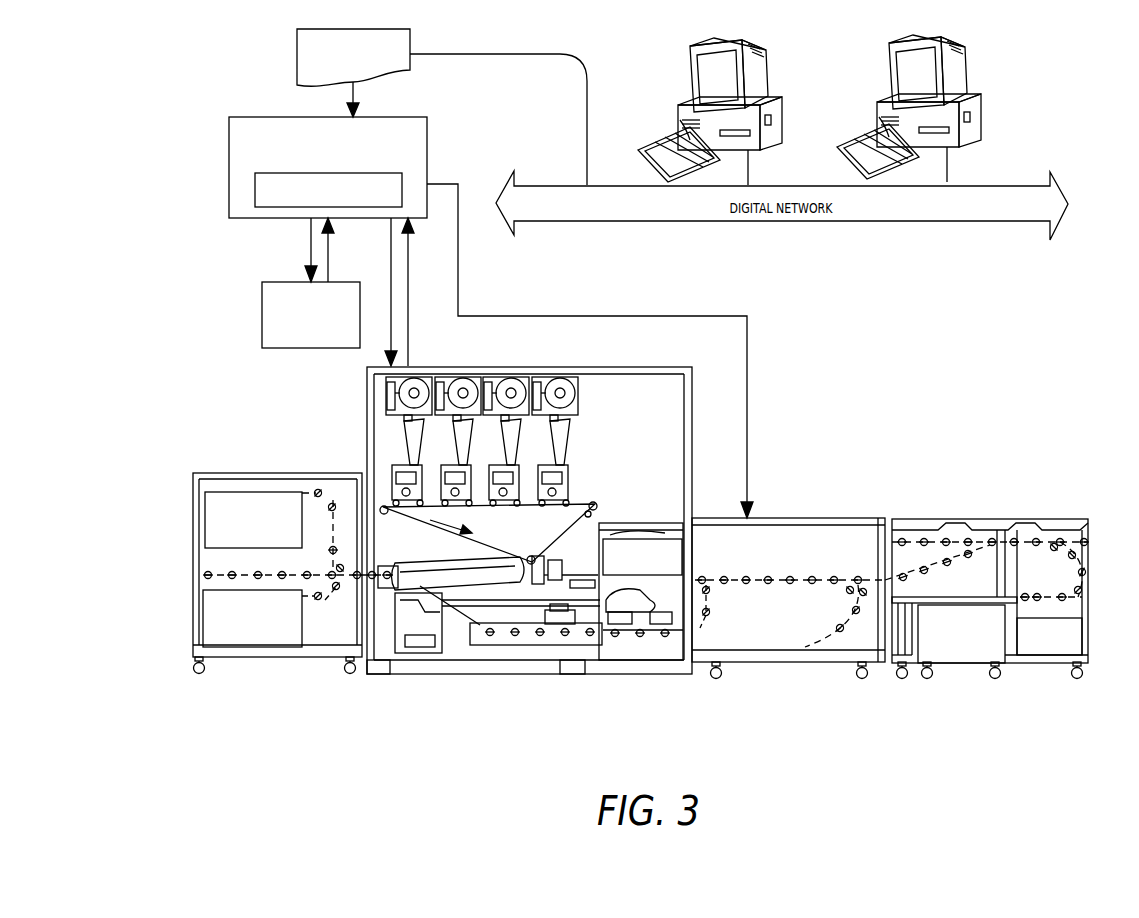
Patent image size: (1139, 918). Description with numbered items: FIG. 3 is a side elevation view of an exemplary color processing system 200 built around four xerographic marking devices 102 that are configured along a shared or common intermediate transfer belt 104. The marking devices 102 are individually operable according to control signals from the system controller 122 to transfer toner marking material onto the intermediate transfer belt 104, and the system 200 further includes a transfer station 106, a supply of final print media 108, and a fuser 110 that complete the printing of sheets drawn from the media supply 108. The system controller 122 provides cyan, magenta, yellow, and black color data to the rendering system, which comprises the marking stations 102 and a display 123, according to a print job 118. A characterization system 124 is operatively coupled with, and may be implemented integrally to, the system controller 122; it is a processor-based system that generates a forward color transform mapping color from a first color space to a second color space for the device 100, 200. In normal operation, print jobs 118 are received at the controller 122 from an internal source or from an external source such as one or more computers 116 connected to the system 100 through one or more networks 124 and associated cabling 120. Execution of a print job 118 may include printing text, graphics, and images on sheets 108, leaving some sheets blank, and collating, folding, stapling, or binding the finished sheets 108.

The system 200 is at (190, 114).
The print job 118 is at (410, 43).
The cabling 120 is at (587, 155).
The system controller 122 is at (229, 150).
The characterization system 124 is at (275, 173).
The display 123 is at (262, 315).
The computers 116 is at (768, 72).
The color processing device 100 is at (367, 397).
The marking devices 102 is at (549, 487).
The intermediate transfer belt 104 is at (430, 533).
The transfer station 106 is at (534, 548).
The supply of final print media 108 is at (250, 548).
The fuser 110 is at (684, 560).